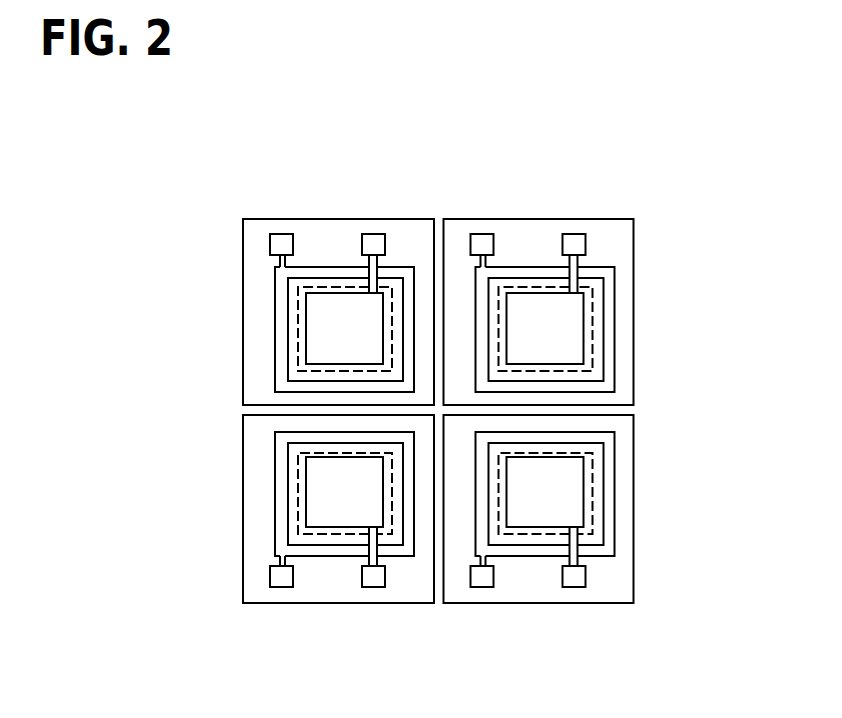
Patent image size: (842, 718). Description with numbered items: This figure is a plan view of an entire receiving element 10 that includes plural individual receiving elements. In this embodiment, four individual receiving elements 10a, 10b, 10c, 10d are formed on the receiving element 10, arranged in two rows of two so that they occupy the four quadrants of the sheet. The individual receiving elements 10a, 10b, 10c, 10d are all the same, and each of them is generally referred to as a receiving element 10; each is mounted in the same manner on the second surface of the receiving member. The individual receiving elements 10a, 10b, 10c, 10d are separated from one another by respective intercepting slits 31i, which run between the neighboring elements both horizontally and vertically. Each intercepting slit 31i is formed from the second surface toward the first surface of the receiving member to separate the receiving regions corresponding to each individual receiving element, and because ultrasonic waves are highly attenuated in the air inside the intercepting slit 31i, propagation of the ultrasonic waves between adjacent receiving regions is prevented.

The receiving element 10 is at (652, 168).
The individual receiving element 10a is at (332, 218).
The individual receiving element 10b is at (539, 280).
The individual receiving element 10c is at (327, 605).
The individual receiving element 10d is at (539, 540).
The intercepting slit 31i is at (443, 218).